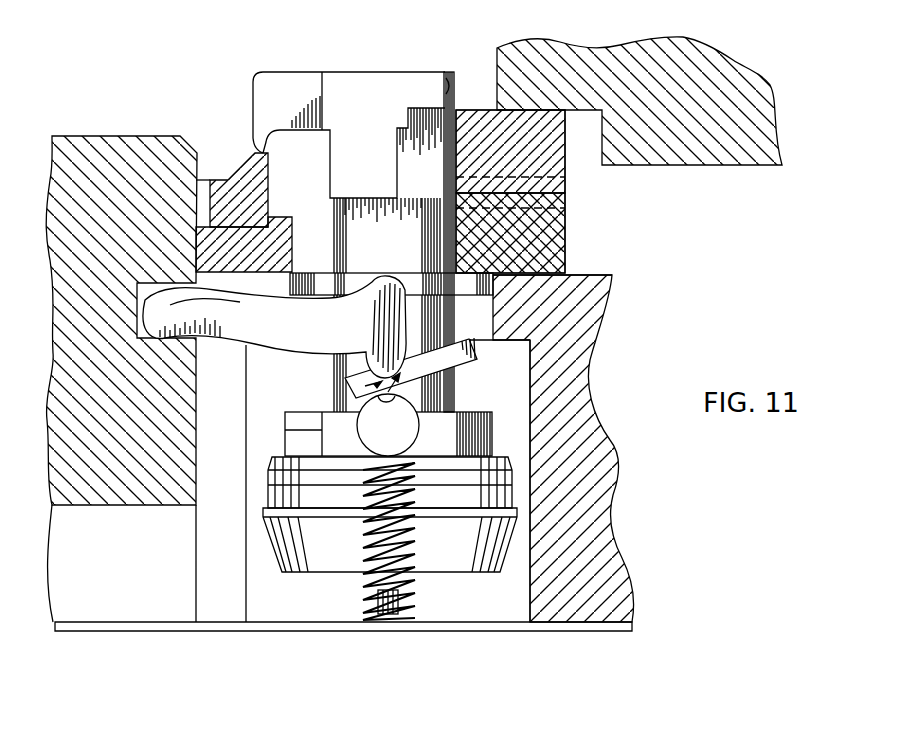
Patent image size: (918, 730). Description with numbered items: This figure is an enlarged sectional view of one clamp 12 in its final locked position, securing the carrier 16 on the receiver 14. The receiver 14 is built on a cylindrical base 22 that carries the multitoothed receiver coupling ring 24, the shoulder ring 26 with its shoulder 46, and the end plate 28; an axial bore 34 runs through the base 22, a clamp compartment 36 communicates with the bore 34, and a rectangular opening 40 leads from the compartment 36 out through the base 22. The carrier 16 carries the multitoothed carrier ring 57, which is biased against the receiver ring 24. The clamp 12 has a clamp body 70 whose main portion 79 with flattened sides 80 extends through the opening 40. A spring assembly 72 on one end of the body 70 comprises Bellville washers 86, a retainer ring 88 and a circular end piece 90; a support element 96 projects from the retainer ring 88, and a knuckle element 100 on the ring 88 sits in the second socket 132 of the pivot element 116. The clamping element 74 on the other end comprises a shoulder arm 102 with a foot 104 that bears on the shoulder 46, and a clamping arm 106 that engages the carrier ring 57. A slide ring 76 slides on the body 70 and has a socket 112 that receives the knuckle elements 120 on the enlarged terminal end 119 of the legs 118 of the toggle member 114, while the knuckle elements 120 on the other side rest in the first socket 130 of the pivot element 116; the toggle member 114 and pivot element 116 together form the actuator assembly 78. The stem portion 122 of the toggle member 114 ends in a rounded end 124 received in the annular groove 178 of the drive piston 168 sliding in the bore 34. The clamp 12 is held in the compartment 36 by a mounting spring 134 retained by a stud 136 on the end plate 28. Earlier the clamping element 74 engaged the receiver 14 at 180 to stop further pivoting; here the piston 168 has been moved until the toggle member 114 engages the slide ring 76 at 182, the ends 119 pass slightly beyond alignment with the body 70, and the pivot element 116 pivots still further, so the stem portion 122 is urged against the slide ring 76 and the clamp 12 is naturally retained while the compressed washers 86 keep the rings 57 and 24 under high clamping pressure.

The clamp 12 is at (458, 128).
The receiver 14 is at (618, 607).
The carrier 16 is at (724, 78).
The cylindrical base 22 is at (606, 550).
The multitoothed receiver coupling ring 24 is at (555, 265).
The shoulder ring 26 is at (227, 183).
The end plate 28 is at (583, 632).
The axial bore 34 is at (230, 245).
The clamp compartment 36 is at (528, 593).
The rectangular opening 40 is at (455, 237).
The shoulder 46 is at (262, 157).
The multitoothed carrier ring 57 is at (555, 165).
The clamp body 70 is at (458, 257).
The spring assembly 72 is at (326, 502).
The clamping element 74 is at (368, 94).
The slide ring 76 is at (310, 282).
The actuator assembly 78 is at (392, 432).
The main portion 79 is at (470, 330).
The flattened side 80 is at (395, 254).
The Bellville washer 86 is at (517, 487).
The retainer ring 88 is at (482, 442).
The circular end piece 90 is at (452, 556).
The support element 96 is at (320, 465).
The knuckle element 100 is at (510, 388).
The shoulder arm 102 is at (297, 78).
The foot 104 is at (262, 146).
The clamping arm 106 is at (452, 86).
The socket 112 is at (327, 320).
The toggle member 114 is at (231, 314).
The pivot element 116 is at (368, 385).
The leg 118 is at (293, 318).
The enlarged terminal end 119 is at (585, 286).
The knuckle element 120 is at (383, 283).
The stem portion 122 is at (148, 298).
The rounded end 124 is at (160, 340).
The first socket 130 is at (478, 355).
The second socket 132 is at (388, 437).
The mounting spring 134 is at (410, 598).
The stud 136 is at (382, 598).
The drive piston 168 is at (62, 346).
The annular groove 178 is at (147, 332).
The engagement location 180 is at (510, 107).
The engagement location 182 is at (247, 347).